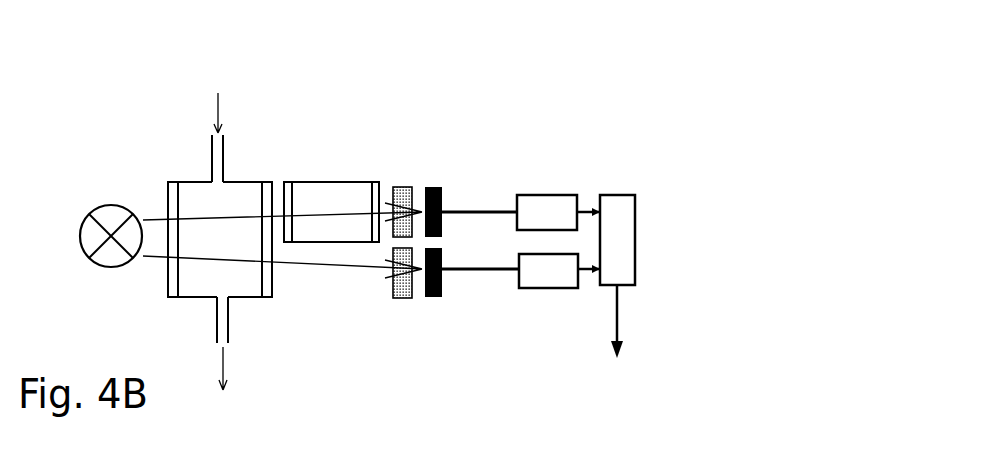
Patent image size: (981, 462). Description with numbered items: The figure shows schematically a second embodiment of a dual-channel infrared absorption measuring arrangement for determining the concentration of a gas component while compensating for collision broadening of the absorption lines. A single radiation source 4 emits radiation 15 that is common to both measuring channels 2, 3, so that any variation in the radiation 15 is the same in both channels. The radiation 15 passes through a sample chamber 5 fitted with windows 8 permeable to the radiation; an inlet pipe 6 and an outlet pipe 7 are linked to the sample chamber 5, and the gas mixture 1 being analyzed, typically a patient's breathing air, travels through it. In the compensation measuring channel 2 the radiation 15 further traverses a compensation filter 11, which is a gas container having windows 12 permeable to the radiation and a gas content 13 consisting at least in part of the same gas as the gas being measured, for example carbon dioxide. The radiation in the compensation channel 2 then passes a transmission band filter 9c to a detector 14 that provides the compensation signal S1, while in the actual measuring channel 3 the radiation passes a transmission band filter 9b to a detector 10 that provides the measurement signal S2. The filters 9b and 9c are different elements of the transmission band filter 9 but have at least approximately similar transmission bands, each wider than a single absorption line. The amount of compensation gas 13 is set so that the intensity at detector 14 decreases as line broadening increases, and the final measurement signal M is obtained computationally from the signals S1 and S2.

The gas mixture 1 is at (230, 251).
The compensation measuring channel 2 is at (558, 195).
The actual measuring channel 3 is at (558, 289).
The radiation source 4 is at (104, 207).
The sample chamber 5 is at (243, 300).
The inlet pipe 6 is at (212, 148).
The outlet pipe 7 is at (216, 327).
The windows 8 is at (278, 182).
The optical transmission band filter 9 is at (421, 185).
The transmission band filter 9b is at (402, 299).
The transmission band filter 9c is at (408, 170).
The detector 10 is at (429, 283).
The compensation filter 11 is at (330, 181).
The windows 12 is at (285, 182).
The gas content 13 is at (342, 229).
The detector 14 is at (426, 198).
The radiation 15 is at (162, 288).
The compensation signal S1 is at (485, 200).
The measurement signal S2 is at (485, 282).
The final measurement signal M is at (617, 293).